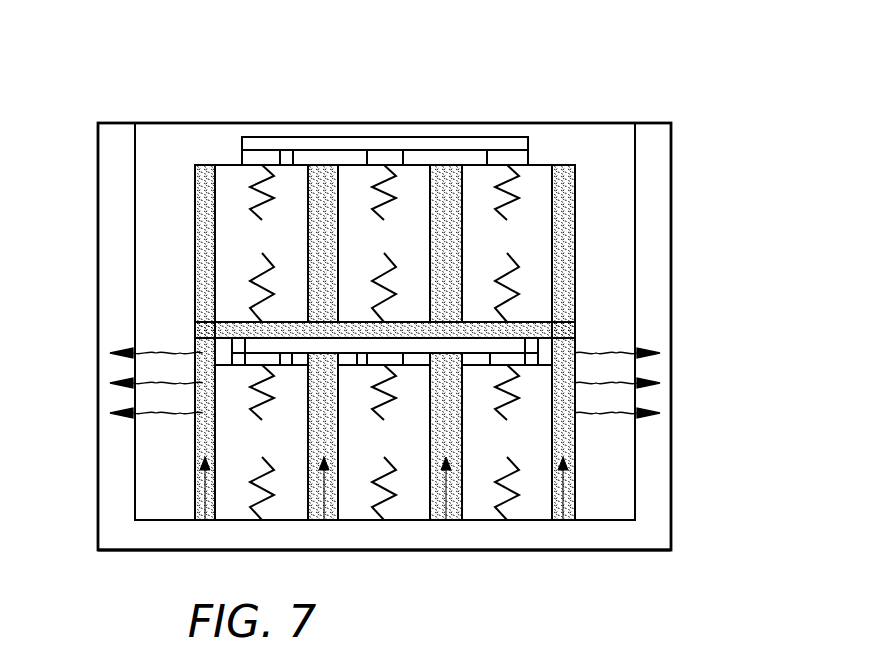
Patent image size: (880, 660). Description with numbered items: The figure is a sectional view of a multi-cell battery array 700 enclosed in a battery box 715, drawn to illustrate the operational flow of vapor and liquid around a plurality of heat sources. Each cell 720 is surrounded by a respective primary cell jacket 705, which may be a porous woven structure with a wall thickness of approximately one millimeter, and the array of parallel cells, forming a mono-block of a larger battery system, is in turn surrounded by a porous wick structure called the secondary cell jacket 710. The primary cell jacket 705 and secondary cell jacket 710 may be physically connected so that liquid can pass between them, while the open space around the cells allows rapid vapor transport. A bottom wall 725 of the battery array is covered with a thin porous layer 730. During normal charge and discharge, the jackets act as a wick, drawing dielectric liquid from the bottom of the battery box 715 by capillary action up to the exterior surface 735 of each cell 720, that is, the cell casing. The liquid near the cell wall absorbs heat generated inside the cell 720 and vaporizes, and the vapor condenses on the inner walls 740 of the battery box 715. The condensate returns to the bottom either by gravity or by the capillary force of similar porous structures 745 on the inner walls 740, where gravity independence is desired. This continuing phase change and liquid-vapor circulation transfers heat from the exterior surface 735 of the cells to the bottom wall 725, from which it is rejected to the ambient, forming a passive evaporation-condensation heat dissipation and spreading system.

The multi-cell battery array 700 is at (382, 340).
The primary cell jacket 705 is at (462, 85).
The secondary cell jacket 710 is at (207, 223).
The battery box 715 is at (382, 320).
The cell 720 is at (243, 249).
The bottom wall 725 is at (520, 550).
The thin porous layer 730 is at (447, 540).
The exterior surface 735 is at (337, 195).
The inner walls 740 is at (98, 297).
The porous structures 745 is at (110, 235).